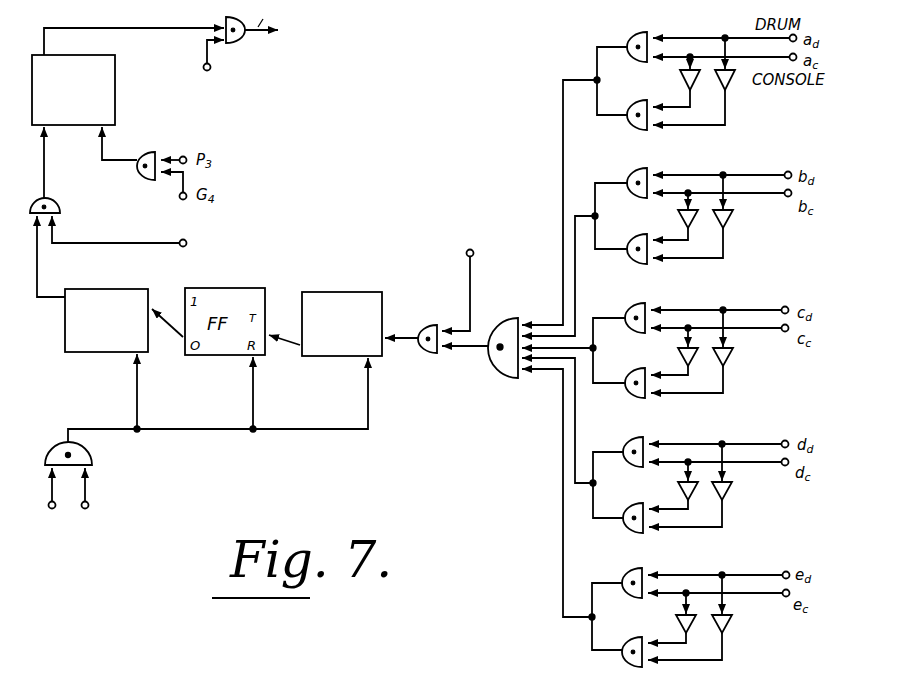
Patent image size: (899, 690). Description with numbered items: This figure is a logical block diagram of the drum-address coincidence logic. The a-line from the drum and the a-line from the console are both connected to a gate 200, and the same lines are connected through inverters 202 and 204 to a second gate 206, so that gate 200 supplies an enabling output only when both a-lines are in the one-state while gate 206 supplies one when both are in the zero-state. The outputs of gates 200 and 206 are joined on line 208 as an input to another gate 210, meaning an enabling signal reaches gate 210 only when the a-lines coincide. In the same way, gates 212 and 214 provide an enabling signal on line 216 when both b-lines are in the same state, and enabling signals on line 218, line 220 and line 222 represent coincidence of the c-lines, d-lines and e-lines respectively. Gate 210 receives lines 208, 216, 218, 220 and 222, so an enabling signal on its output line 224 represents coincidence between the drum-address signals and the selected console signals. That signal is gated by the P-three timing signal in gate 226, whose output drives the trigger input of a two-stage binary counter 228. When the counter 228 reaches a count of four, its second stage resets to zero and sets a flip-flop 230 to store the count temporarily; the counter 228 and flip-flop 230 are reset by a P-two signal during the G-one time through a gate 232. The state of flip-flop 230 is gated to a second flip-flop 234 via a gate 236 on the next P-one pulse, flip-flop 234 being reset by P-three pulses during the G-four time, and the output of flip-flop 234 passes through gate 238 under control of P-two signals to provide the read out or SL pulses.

The gate 200 is at (630, 35).
The inverter 202 is at (684, 87).
The inverter 204 is at (728, 88).
The second gate 206 is at (641, 130).
The line 208 is at (562, 190).
The gate 210 is at (506, 318).
The gate 212 is at (642, 198).
The gate 214 is at (645, 264).
The line 216 is at (577, 287).
The line 218 is at (583, 356).
The line 220 is at (576, 430).
The line 222 is at (564, 551).
The output line 224 is at (470, 347).
The gate 226 is at (431, 353).
The two-stage binary counter 228 is at (333, 292).
The flip-flop 230 is at (151, 267).
The gate 232 is at (92, 462).
The second flip-flop 234 is at (115, 110).
The gate 236 is at (60, 210).
The gate 238 is at (240, 45).